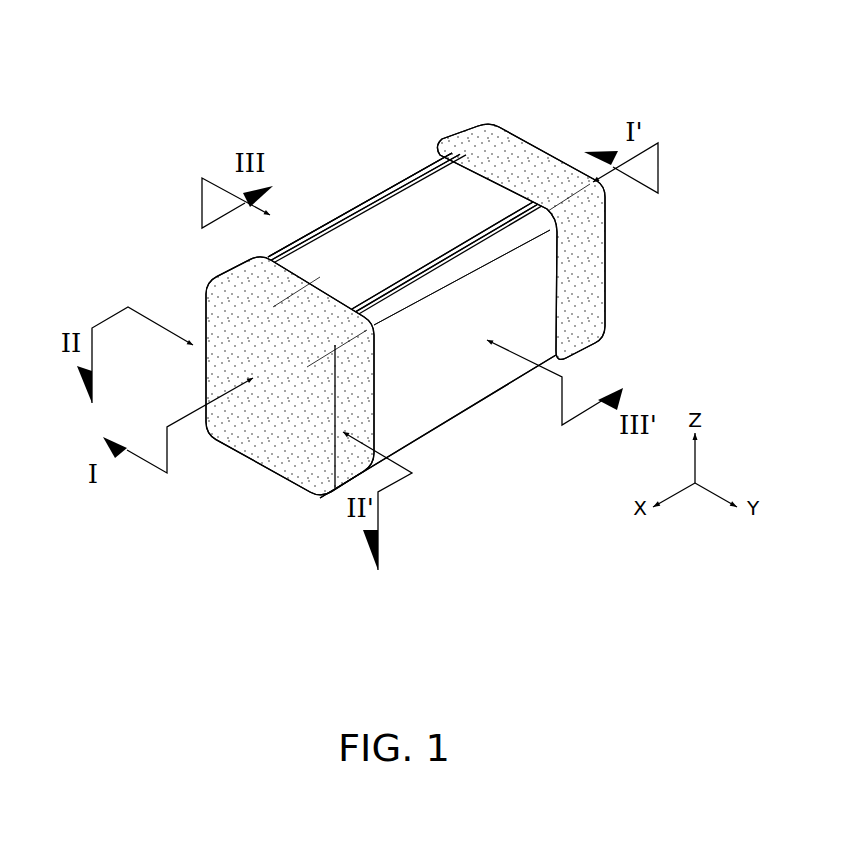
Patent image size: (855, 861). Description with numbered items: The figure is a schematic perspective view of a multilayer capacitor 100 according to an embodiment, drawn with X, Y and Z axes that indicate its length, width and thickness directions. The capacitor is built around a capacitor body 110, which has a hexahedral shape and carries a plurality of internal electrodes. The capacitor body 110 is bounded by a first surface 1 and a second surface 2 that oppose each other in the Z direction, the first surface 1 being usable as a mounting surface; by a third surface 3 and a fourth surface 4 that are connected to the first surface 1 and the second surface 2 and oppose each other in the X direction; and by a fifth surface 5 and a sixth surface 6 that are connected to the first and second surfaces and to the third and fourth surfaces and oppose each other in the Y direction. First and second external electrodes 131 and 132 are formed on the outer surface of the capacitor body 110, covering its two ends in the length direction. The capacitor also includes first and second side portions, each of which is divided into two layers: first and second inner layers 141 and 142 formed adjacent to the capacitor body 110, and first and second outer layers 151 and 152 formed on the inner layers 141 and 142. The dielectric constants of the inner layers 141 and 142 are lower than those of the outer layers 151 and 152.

The multilayer capacitor 100 is at (388, 24).
The capacitor body 110 is at (388, 221).
The first surface 1 is at (407, 372).
The second surface 2 is at (367, 243).
The third surface 3 is at (280, 428).
The fourth surface 4 is at (527, 128).
The fifth surface 5 is at (341, 204).
The sixth surface 6 is at (458, 377).
The first external electrode 131 is at (289, 462).
The second external electrode 132 is at (587, 306).
The first inner layer 141 is at (434, 173).
The second inner layer 142 is at (518, 222).
The first outer layer 151 is at (411, 187).
The second outer layer 152 is at (490, 250).